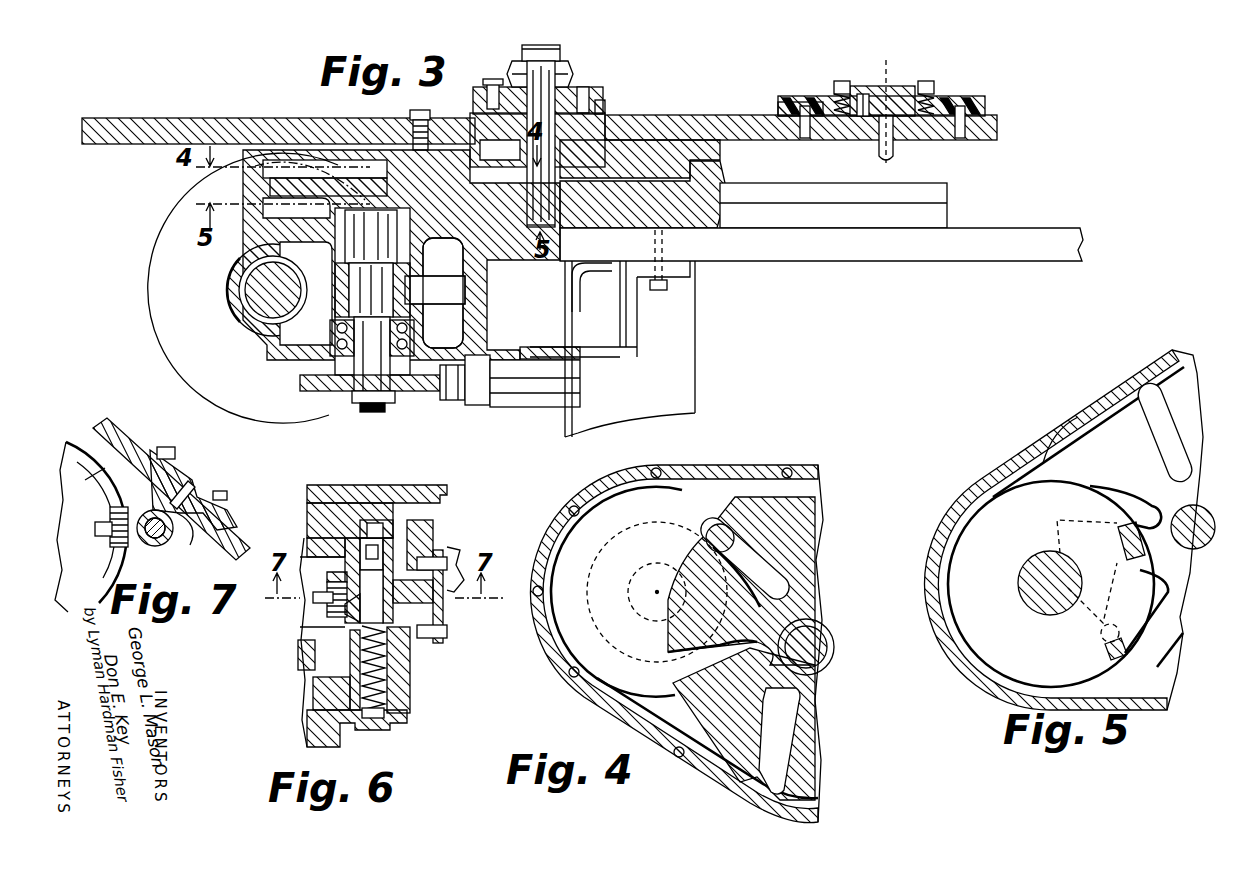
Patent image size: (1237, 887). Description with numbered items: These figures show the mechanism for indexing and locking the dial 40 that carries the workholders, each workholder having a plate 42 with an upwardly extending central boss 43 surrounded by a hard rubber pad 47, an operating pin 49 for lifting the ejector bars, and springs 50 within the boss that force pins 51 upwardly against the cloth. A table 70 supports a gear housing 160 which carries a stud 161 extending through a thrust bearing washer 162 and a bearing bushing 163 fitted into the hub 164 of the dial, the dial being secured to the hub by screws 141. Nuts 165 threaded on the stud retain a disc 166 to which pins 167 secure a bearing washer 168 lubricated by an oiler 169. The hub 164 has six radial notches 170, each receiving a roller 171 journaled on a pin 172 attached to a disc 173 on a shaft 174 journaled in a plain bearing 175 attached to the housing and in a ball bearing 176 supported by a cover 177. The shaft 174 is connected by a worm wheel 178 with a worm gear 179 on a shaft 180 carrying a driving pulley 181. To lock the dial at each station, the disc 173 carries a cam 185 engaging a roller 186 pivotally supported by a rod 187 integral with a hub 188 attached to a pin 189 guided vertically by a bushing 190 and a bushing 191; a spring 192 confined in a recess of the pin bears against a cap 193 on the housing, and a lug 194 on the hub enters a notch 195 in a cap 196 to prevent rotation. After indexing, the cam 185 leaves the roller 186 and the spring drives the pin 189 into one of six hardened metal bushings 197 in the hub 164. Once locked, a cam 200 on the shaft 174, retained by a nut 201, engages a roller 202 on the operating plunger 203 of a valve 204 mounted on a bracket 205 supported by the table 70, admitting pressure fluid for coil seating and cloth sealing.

In FIG. 3, the dial 40 is at (720, 115).
In FIG. 6, the dial 40 is at (335, 485).
In FIG. 3, the plate 42 is at (987, 106).
In FIG. 3, the central boss 43 is at (893, 86).
In FIG. 3, the pad 47 is at (808, 96).
In FIG. 3, the operating pin 49 is at (897, 148).
In FIG. 3, the springs 50 is at (861, 94).
In FIG. 3, the pins 51 is at (841, 81).
In FIG. 3, the table 70 is at (1040, 228).
In FIG. 3, the screws 141 is at (420, 110).
In FIG. 3, the gear housing 160 is at (948, 195).
In FIG. 7, the gear housing 160 is at (232, 535).
In FIG. 6, the gear housing 160 is at (398, 680).
In FIG. 4, the gear housing 160 is at (700, 470).
In FIG. 5, the gear housing 160 is at (972, 498).
In FIG. 3, the stud 161 is at (527, 230).
In FIG. 4, the stud 161 is at (814, 642).
In FIG. 5, the stud 161 is at (1180, 508).
In FIG. 3, the thrust bearing washer 162 is at (643, 203).
In FIG. 3, the bearing bushing 163 is at (606, 118).
In FIG. 4, the bearing bushing 163 is at (812, 667).
In FIG. 3, the hub 164 is at (640, 145).
In FIG. 4, the hub 164 is at (668, 640).
In FIG. 5, the hub 164 is at (1095, 437).
In FIG. 3, the nuts 165 is at (556, 62).
In FIG. 3, the disc 166 is at (603, 94).
In FIG. 3, the pins 167 is at (585, 87).
In FIG. 3, the bearing washer 168 is at (605, 111).
In FIG. 3, the oiler 169 is at (492, 79).
In FIG. 4, the notches 170 is at (746, 560).
In FIG. 5, the notches 170 is at (1155, 395).
In FIG. 4, the roller 171 is at (740, 532).
In FIG. 4, the pin 172 is at (707, 535).
In FIG. 3, the disc 173 is at (265, 178).
In FIG. 7, the disc 173 is at (70, 440).
In FIG. 4, the disc 173 is at (563, 525).
In FIG. 5, the disc 173 is at (1048, 447).
In FIG. 3, the shaft 174 is at (375, 410).
In FIG. 4, the shaft 174 is at (657, 592).
In FIG. 5, the shaft 174 is at (1040, 613).
In FIG. 3, the plain bearing 175 is at (443, 293).
In FIG. 3, the ball bearing 176 is at (397, 293).
In FIG. 3, the cover 177 is at (480, 356).
In FIG. 3, the worm wheel 178 is at (466, 290).
In FIG. 3, the worm gear 179 is at (258, 300).
In FIG. 3, the shaft 180 is at (262, 325).
In FIG. 3, the driving pulley 181 is at (150, 283).
In FIG. 7, the cam 185 is at (97, 480).
In FIG. 6, the cam 185 is at (330, 578).
In FIG. 5, the cam 185 is at (1138, 567).
In FIG. 7, the roller 186 is at (110, 512).
In FIG. 6, the roller 186 is at (335, 617).
In FIG. 7, the rod 187 is at (96, 534).
In FIG. 6, the rod 187 is at (313, 598).
In FIG. 7, the hub 188 is at (153, 546).
In FIG. 6, the hub 188 is at (352, 626).
In FIG. 7, the pin 189 is at (150, 511).
In FIG. 6, the pin 189 is at (381, 580).
In FIG. 6, the bushing 190 is at (420, 546).
In FIG. 6, the bushing 191 is at (400, 665).
In FIG. 6, the spring 192 is at (390, 700).
In FIG. 6, the cap 193 is at (378, 720).
In FIG. 7, the lug 194 is at (197, 534).
In FIG. 7, the notch 195 is at (192, 490).
In FIG. 7, the cap 196 is at (172, 476).
In FIG. 6, the cap 196 is at (444, 612).
In FIG. 6, the hardened metal bushings 197 is at (388, 528).
In FIG. 3, the cam 200 is at (300, 384).
In FIG. 3, the nut 201 is at (355, 402).
In FIG. 3, the roller 202 is at (450, 392).
In FIG. 3, the operating plunger 203 is at (478, 405).
In FIG. 3, the valve 204 is at (532, 407).
In FIG. 3, the bracket 205 is at (636, 326).